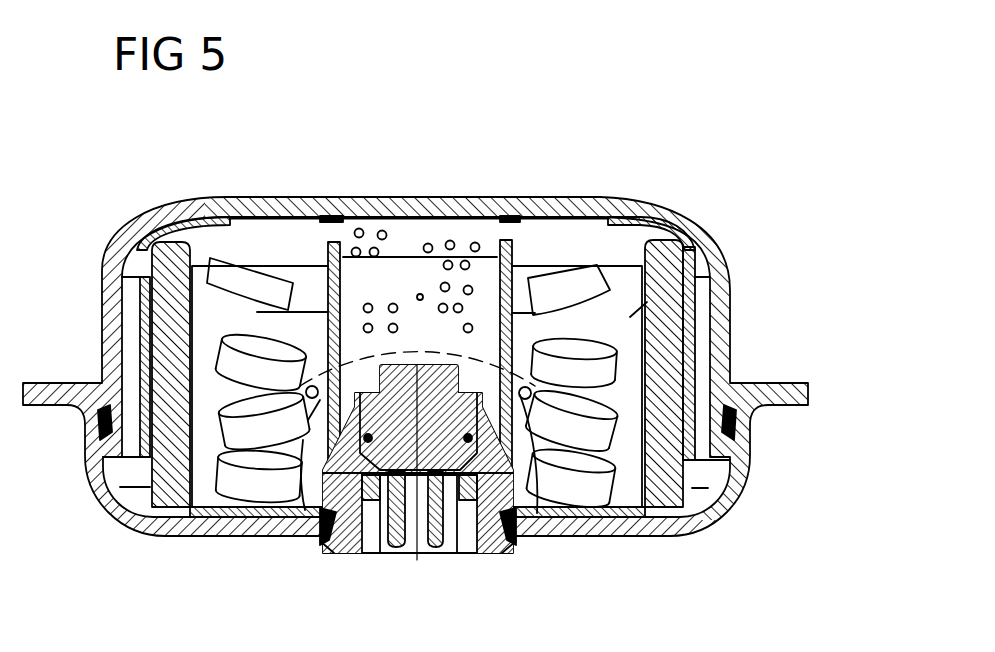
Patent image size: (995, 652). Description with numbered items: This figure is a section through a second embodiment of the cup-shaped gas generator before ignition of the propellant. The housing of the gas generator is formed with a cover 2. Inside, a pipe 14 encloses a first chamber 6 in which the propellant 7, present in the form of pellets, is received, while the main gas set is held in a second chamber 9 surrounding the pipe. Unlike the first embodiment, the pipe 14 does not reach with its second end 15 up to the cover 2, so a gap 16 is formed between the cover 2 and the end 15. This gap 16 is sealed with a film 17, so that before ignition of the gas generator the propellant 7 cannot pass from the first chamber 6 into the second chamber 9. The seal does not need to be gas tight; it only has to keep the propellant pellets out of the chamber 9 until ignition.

The cover 2 is at (663, 225).
The first chamber 6 is at (393, 277).
The propellant 7 is at (420, 296).
The second chamber 9 is at (693, 265).
The pipe 14 is at (515, 268).
The second end 15 is at (506, 240).
The gap 16 is at (325, 216).
The film 17 is at (350, 216).